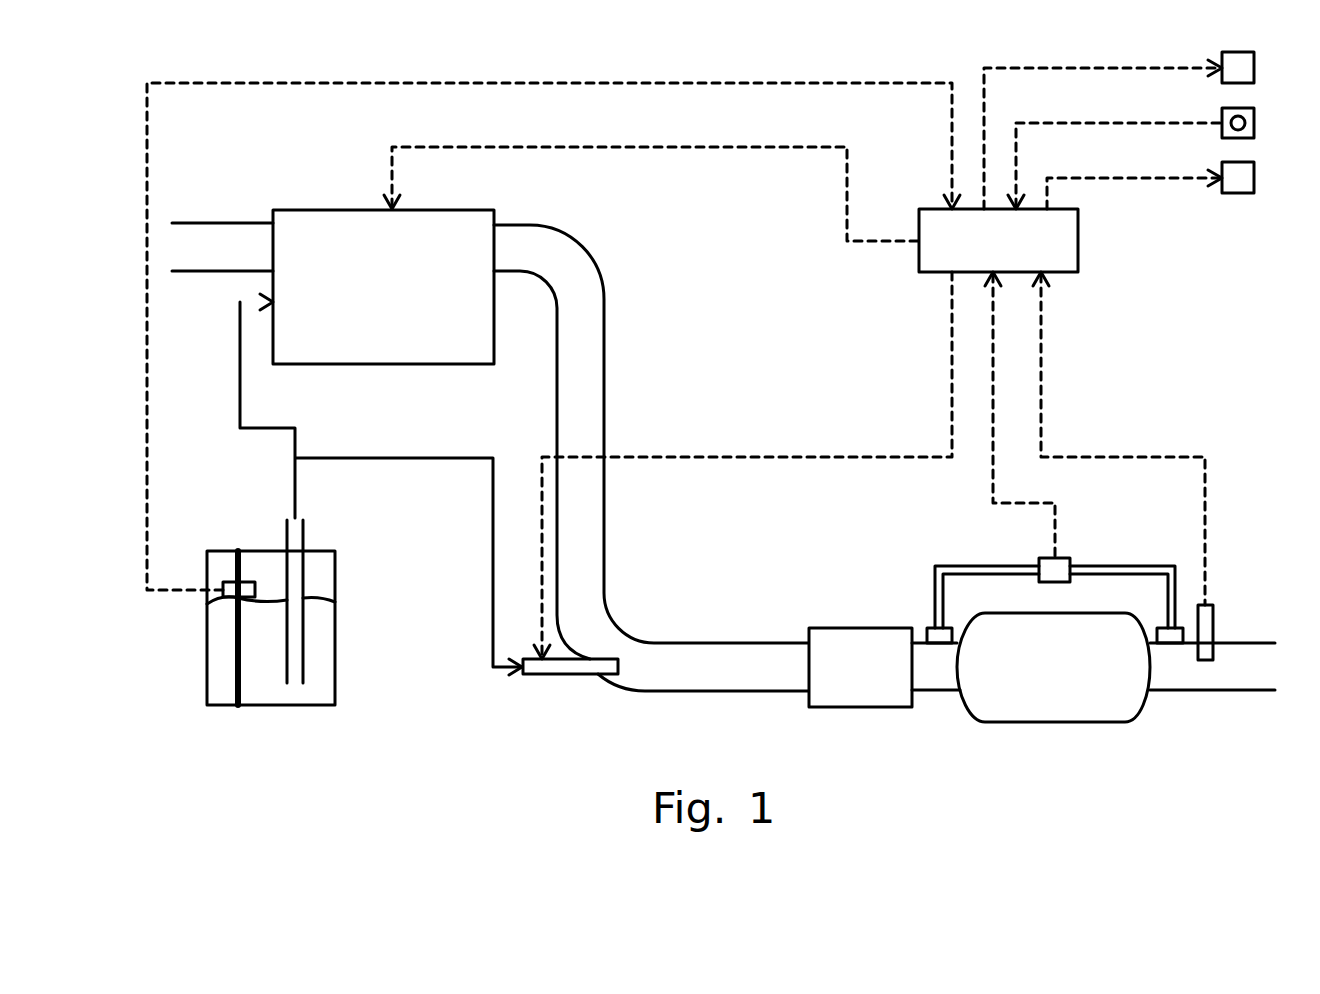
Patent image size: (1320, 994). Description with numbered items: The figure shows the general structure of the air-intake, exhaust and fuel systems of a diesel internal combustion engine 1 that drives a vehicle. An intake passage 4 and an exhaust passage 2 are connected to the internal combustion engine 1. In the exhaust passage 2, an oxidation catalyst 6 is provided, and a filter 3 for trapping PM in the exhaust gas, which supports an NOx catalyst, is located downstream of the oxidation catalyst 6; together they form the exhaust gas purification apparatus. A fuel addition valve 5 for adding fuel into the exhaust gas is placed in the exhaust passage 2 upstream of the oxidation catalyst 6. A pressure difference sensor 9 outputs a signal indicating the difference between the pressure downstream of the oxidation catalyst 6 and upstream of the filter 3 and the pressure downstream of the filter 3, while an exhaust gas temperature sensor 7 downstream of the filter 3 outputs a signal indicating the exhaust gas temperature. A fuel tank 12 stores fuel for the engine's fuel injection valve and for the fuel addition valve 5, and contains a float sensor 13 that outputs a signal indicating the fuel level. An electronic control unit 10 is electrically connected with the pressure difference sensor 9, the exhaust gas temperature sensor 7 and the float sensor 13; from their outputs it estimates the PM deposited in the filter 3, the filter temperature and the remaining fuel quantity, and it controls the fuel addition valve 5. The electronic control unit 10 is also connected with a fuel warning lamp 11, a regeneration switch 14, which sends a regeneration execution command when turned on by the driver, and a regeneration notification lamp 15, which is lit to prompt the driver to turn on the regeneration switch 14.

The internal combustion engine 1 is at (374, 364).
The exhaust passage 2 is at (604, 365).
The filter 3 is at (1047, 722).
The intake passage 4 is at (232, 223).
The fuel addition valve 5 is at (553, 674).
The oxidation catalyst 6 is at (858, 707).
The exhaust gas temperature sensor 7 is at (1213, 630).
The pressure difference sensor 9 is at (1060, 558).
The electronic control unit 10 is at (1078, 240).
The fuel warning lamp 11 is at (1254, 68).
The fuel tank 12 is at (335, 643).
The float sensor 13 is at (230, 582).
The regeneration switch 14 is at (1254, 123).
The regeneration notification lamp 15 is at (1254, 178).